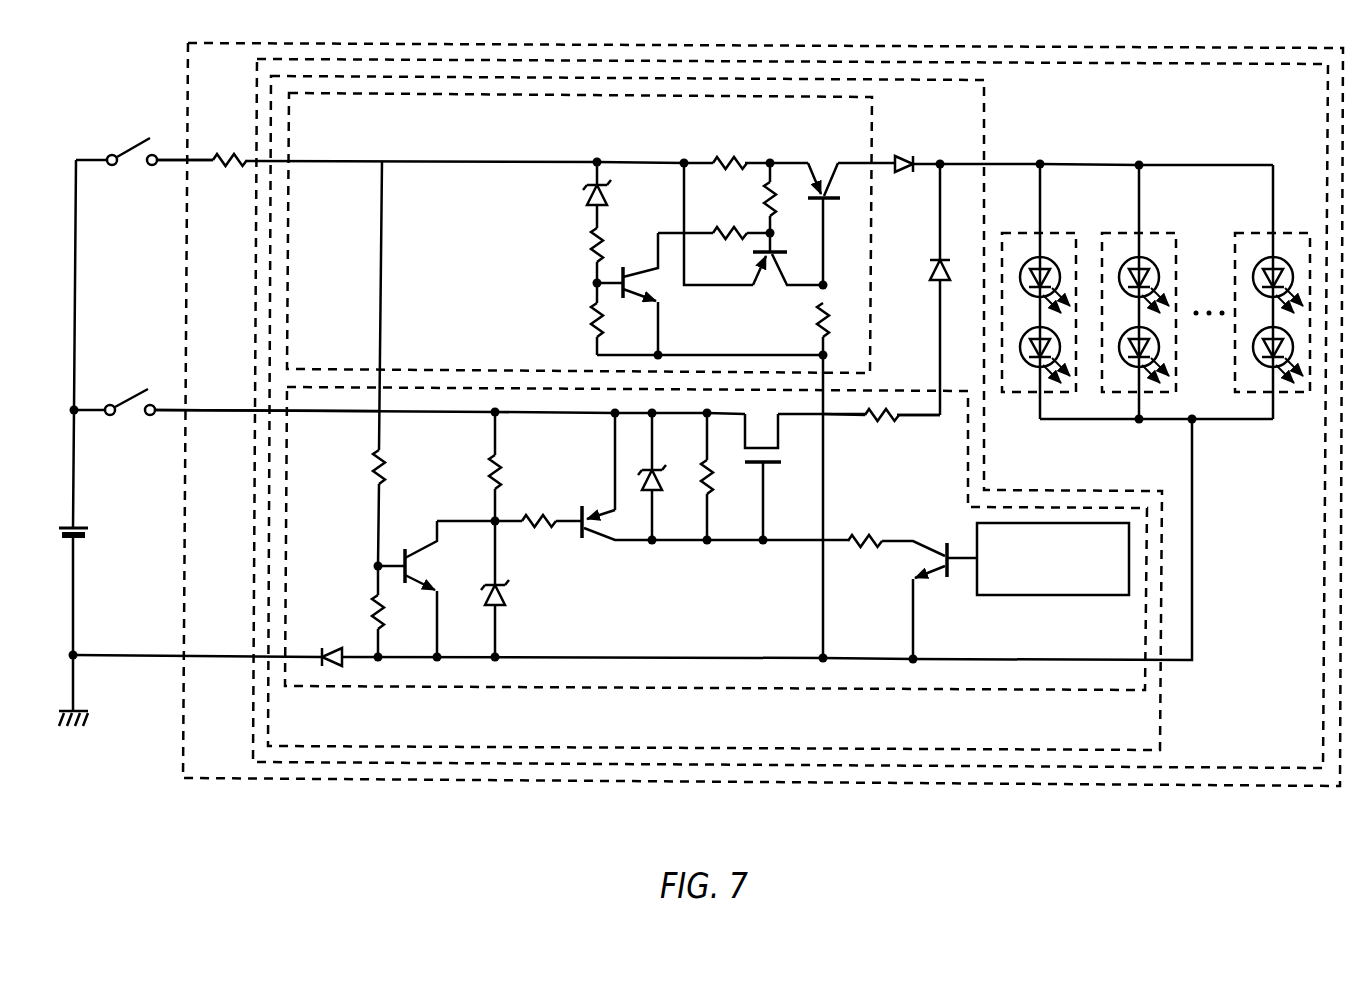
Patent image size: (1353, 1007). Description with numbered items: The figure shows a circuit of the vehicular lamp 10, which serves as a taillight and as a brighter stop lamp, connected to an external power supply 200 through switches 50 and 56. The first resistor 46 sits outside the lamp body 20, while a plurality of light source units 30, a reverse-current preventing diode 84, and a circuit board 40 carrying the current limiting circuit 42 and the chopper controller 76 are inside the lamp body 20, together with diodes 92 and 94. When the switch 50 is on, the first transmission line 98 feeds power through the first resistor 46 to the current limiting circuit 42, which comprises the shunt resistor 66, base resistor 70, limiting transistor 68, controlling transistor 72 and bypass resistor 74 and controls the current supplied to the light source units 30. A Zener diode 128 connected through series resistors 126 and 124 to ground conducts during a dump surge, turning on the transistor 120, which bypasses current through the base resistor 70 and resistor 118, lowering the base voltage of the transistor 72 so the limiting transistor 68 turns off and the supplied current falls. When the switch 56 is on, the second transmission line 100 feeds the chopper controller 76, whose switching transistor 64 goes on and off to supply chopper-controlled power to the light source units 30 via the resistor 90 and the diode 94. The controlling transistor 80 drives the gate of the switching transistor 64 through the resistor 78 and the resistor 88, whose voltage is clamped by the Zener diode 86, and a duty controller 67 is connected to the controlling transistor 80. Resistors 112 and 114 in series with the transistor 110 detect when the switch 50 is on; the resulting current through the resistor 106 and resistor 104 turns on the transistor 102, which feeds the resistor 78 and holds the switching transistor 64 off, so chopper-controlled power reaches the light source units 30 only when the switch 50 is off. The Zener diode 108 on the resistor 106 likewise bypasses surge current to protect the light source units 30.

The vehicular lamp 10 is at (186, 740).
The lamp body 20 is at (255, 730).
The light source unit 30 is at (1058, 233).
The circuit board 40 is at (1162, 726).
The current limiting circuit 42 is at (873, 207).
The first resistor 46 is at (232, 150).
The switch 50 is at (130, 172).
The switch 56 is at (125, 385).
The switching transistor 64 is at (777, 476).
The shunt resistor 66 is at (729, 153).
The duty controller 67 is at (1055, 596).
The limiting transistor 68 is at (819, 186).
The base resistor 70 is at (762, 205).
The controlling transistor 72 is at (772, 288).
The bypass resistor 74 is at (831, 306).
The chopper controller 76 is at (1000, 690).
The resistor 78 is at (870, 530).
The controlling transistor 80 is at (908, 564).
The diode 84 is at (333, 646).
The Zener diode 86 is at (657, 492).
The resistor 88 is at (713, 495).
The resistor 90 is at (881, 428).
The diode 92 is at (903, 152).
The diode 94 is at (937, 283).
The first transmission line 98 is at (202, 165).
The second transmission line 100 is at (218, 413).
The transistor 102 is at (594, 546).
The resistor 104 is at (535, 511).
The resistor 106 is at (487, 456).
The Zener diode 108 is at (507, 594).
The transistor 110 is at (419, 545).
The resistor 112 is at (370, 462).
The resistor 114 is at (369, 598).
The resistor 118 is at (731, 240).
The transistor 120 is at (662, 288).
The resistor 124 is at (589, 318).
The resistor 126 is at (589, 243).
The Zener diode 128 is at (607, 196).
The power supply 200 is at (84, 522).